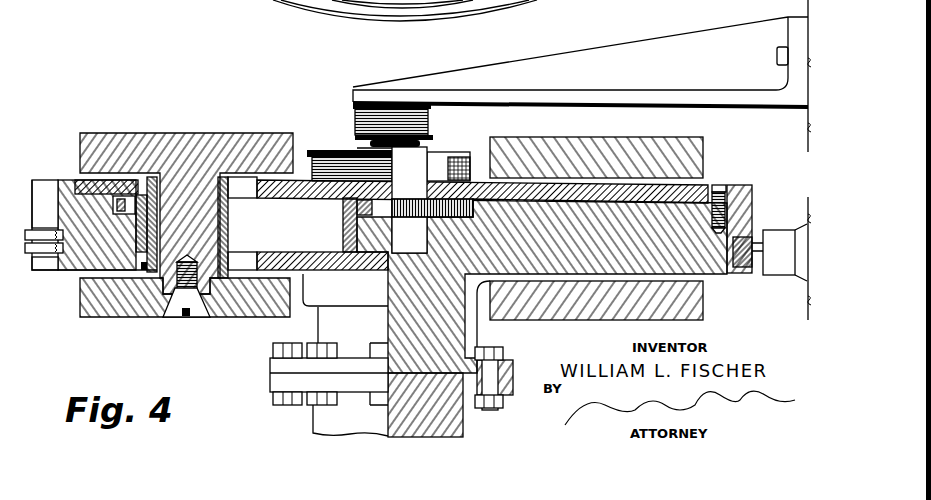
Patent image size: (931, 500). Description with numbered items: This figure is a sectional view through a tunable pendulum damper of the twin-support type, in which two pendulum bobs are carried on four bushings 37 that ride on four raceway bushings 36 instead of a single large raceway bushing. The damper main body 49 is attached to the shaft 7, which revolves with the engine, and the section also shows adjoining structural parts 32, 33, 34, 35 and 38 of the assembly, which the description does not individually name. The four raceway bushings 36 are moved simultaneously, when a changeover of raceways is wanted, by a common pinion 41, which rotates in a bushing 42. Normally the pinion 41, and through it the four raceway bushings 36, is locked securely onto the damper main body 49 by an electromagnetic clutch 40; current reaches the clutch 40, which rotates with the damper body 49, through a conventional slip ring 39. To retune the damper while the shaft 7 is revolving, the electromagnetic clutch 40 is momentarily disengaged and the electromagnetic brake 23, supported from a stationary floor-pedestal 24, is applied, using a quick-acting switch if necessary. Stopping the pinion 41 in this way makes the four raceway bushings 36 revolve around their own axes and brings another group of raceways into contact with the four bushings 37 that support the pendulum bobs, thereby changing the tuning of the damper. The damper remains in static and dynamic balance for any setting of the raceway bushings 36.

The shaft 7 is at (463, 427).
The electromagnetic brake 23 is at (430, 137).
The floor-pedestal 24 is at (650, 53).
The upper stator block 32 is at (135, 133).
The lower stator block 33 is at (118, 318).
The end block 34 is at (733, 190).
The screw 35 is at (716, 185).
The raceway bushing 36 is at (345, 233).
The bushing 37 is at (230, 222).
The screw 38 is at (177, 318).
The slip ring 39 is at (752, 268).
The electromagnetic clutch 40 is at (348, 158).
The pinion 41 is at (432, 200).
The bushing 42 is at (470, 298).
The damper main body 49 is at (258, 318).